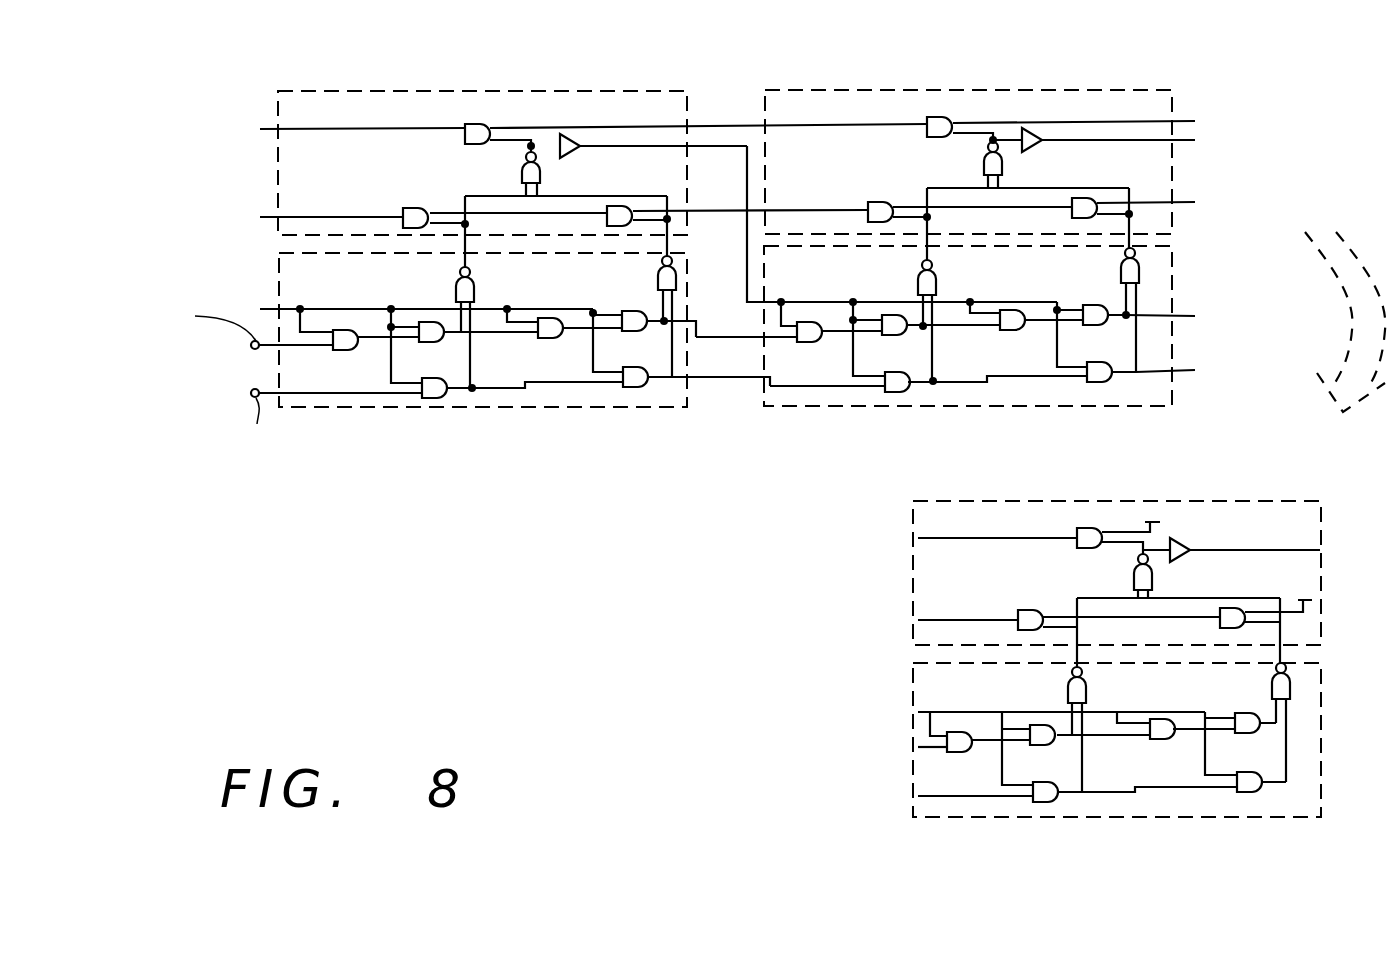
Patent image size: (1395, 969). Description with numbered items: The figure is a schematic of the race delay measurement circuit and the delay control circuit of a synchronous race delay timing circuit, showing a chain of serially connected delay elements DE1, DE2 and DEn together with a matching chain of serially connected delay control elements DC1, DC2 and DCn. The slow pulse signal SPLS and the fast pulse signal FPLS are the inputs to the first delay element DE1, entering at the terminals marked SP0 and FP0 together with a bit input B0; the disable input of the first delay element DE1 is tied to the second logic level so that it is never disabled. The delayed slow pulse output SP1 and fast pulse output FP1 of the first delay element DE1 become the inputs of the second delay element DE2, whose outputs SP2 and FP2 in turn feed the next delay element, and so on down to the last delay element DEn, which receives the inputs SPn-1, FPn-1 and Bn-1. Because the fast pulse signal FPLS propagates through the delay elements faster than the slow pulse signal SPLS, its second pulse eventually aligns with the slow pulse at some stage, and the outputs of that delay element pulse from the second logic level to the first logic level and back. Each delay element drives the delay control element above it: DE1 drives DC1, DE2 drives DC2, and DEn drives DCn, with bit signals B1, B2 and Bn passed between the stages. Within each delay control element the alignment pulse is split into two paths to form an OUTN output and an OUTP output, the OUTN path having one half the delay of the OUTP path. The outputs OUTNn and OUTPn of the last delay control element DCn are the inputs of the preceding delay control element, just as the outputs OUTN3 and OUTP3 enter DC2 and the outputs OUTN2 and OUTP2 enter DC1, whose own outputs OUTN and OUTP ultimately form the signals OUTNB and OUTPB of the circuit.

The delay control element DC1 is at (512, 166).
The first delay element DE1 is at (524, 347).
The delay control element DC2 is at (968, 162).
The second delay element DE2 is at (968, 344).
The delay control element DCn is at (1117, 567).
The delay element DEn is at (1117, 763).
The output OUTN is at (324, 129).
The output OUTP is at (293, 211).
The output OUTN2 is at (705, 128).
The output OUTP2 is at (725, 211).
The output OUTN3 is at (1124, 118).
The output OUTP3 is at (1196, 203).
The output OUTNn is at (945, 525).
The output OUTPn is at (915, 608).
The bit signal 0 B0 is at (410, 301).
The bit signal 1 B1 is at (748, 182).
The bit signal 2 B2 is at (1139, 152).
The bit signal n Bn is at (1274, 550).
The bit signal n-1 Bn-1 is at (1020, 693).
The slow pulse signal SPLS is at (184, 322).
The fast pulse signal FPLS is at (243, 429).
The start pulse 0 SP0 is at (258, 343).
The slow pulse output SP1 is at (745, 310).
The slow pulse output SP2 is at (1191, 318).
The start pulse n-1 SPn-1 is at (882, 731).
The finish pulse 0 FP0 is at (302, 393).
The fast pulse output FP1 is at (827, 372).
The fast pulse output FP2 is at (1195, 371).
The finish pulse n-1 FPn-1 is at (925, 785).